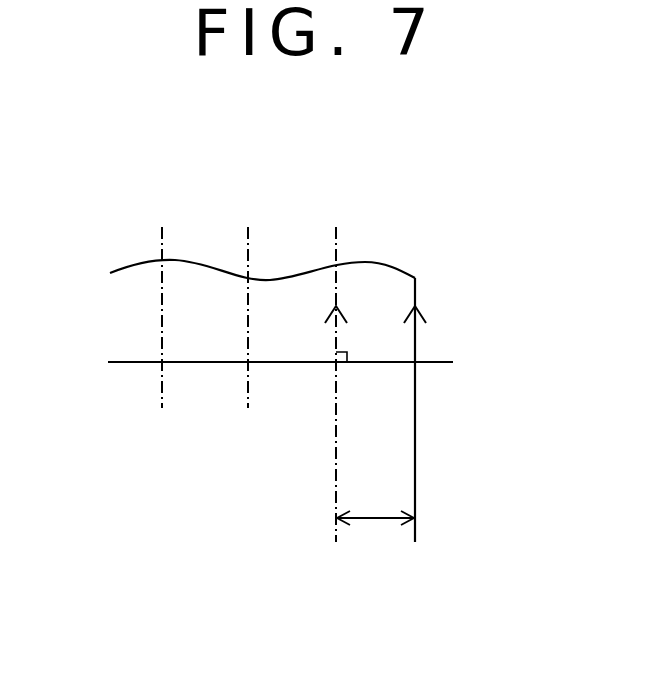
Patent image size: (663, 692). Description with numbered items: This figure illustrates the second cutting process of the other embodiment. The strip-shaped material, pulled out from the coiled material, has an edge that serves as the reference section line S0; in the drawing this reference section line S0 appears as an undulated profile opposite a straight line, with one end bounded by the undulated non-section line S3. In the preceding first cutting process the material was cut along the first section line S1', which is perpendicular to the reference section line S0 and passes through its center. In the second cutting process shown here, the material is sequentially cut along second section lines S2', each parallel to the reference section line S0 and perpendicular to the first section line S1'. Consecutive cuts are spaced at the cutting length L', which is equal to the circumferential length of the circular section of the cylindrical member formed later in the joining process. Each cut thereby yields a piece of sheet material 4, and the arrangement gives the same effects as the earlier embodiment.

The reference section line S0 is at (415, 293).
The first section line S1' is at (324, 397).
The second section line S2' is at (227, 346).
The non-section line S3 is at (385, 265).
The sheet material 4 is at (205, 350).
The cutting length L' is at (375, 533).